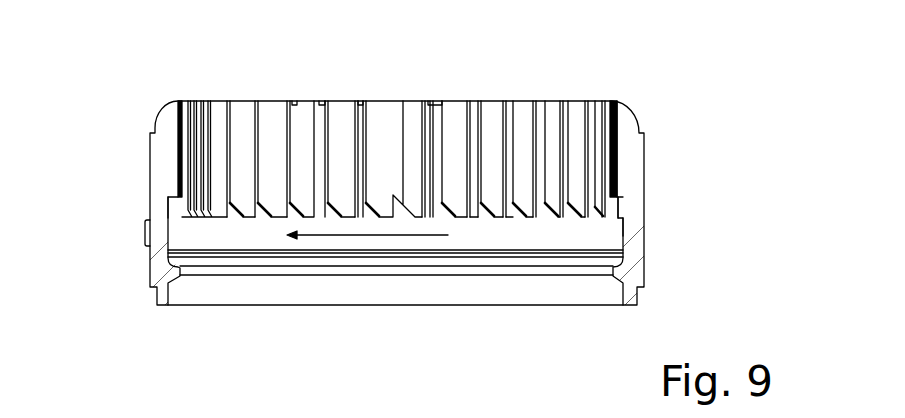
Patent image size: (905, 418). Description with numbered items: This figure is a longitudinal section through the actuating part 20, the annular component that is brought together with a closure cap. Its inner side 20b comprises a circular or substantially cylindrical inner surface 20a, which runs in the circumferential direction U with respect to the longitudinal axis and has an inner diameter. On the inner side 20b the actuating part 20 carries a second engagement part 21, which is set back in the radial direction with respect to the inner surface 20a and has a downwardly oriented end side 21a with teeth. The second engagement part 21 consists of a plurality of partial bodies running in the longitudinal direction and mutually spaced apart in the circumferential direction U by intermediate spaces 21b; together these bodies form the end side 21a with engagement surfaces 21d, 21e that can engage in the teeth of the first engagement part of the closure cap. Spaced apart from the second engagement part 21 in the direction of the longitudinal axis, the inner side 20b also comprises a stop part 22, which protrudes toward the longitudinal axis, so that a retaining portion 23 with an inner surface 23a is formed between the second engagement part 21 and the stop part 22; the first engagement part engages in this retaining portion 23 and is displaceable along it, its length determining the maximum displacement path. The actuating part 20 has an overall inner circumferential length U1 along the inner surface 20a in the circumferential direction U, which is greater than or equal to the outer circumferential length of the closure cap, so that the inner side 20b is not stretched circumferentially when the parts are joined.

The actuating part 20 is at (657, 91).
The inner surface 20a is at (599, 108).
The inner side 20b is at (607, 127).
The second engagement part 21 is at (303, 120).
The end side 21a is at (347, 216).
The intermediate spaces 21b is at (327, 120).
The engagement surface 21d is at (523, 208).
The engagement surface 21e is at (478, 208).
The stop part 22 is at (578, 266).
The retaining portion 23 is at (147, 236).
The inner surface of the retaining portion 23a is at (176, 231).
The circumferential direction U is at (361, 237).
The inner circumferential length U1 is at (636, 49).